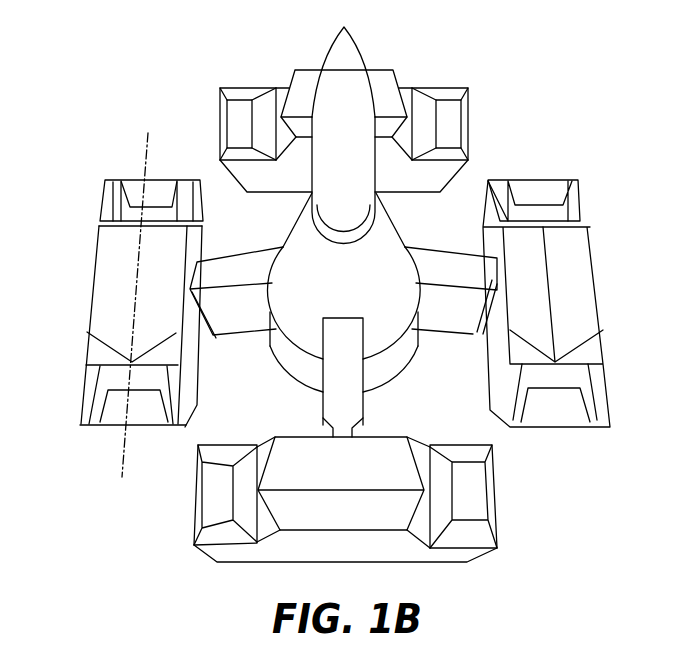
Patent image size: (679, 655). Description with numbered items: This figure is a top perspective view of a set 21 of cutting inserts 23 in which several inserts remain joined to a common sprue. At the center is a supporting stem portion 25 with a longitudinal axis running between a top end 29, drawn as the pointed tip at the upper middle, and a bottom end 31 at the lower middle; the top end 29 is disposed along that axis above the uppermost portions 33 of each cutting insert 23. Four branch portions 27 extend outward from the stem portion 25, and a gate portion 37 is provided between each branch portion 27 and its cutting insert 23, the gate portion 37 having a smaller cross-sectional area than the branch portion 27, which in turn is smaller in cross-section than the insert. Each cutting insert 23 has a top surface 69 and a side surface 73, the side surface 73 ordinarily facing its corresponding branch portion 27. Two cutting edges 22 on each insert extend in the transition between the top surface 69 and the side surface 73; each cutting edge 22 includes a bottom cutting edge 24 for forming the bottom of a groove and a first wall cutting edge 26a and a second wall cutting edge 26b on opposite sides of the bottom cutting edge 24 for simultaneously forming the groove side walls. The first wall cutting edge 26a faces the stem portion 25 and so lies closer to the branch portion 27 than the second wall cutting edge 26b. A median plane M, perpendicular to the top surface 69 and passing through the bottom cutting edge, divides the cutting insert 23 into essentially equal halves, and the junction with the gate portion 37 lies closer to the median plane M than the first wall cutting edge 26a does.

The set of cutting inserts 21 is at (152, 82).
The cutting edge 22 is at (160, 182).
The cutting insert 23 is at (82, 227).
The bottom cutting edge 24 is at (132, 168).
The stem portion 25 is at (417, 73).
The first wall cutting edge 26a is at (212, 172).
The second wall cutting edge 26b is at (107, 180).
The branch portion 27 is at (247, 272).
The top end 29 is at (357, 52).
The bottom end 31 is at (383, 397).
The uppermost portion 33 is at (510, 181).
The gate portion 37 is at (190, 252).
The top surface 69 is at (450, 120).
The side surface 73 is at (417, 186).
The median plane M is at (150, 140).